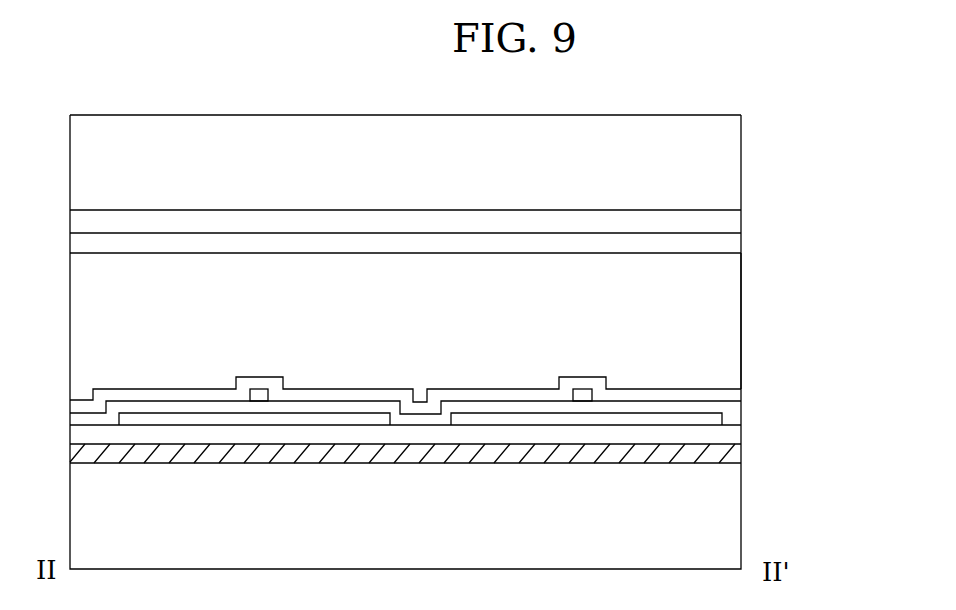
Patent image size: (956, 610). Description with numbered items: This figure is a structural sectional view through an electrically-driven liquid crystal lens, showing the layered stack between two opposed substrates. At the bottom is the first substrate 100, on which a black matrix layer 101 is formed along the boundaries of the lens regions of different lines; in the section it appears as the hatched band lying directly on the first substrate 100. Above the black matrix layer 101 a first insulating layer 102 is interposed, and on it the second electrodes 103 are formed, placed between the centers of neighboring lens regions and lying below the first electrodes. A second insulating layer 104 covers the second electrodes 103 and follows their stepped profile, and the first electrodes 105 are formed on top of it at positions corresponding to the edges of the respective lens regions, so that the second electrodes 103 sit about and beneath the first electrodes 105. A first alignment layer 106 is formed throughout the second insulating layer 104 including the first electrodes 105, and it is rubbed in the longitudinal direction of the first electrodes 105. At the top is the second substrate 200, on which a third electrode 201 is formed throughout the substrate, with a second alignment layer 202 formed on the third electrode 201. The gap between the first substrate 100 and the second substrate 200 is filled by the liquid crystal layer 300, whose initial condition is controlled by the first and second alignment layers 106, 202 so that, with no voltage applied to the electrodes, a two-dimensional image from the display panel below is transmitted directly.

The first substrate 100 is at (725, 540).
The black matrix layer 101 is at (728, 460).
The first insulating layer 102 is at (720, 435).
The second electrodes 103 is at (168, 418).
The second insulating layer 104 is at (710, 407).
The first electrodes 105 is at (259, 393).
The first alignment layer 106 is at (655, 395).
The second substrate 200 is at (730, 140).
The third electrode 201 is at (730, 222).
The second alignment layer 202 is at (730, 243).
The liquid crystal layer 300 is at (728, 313).